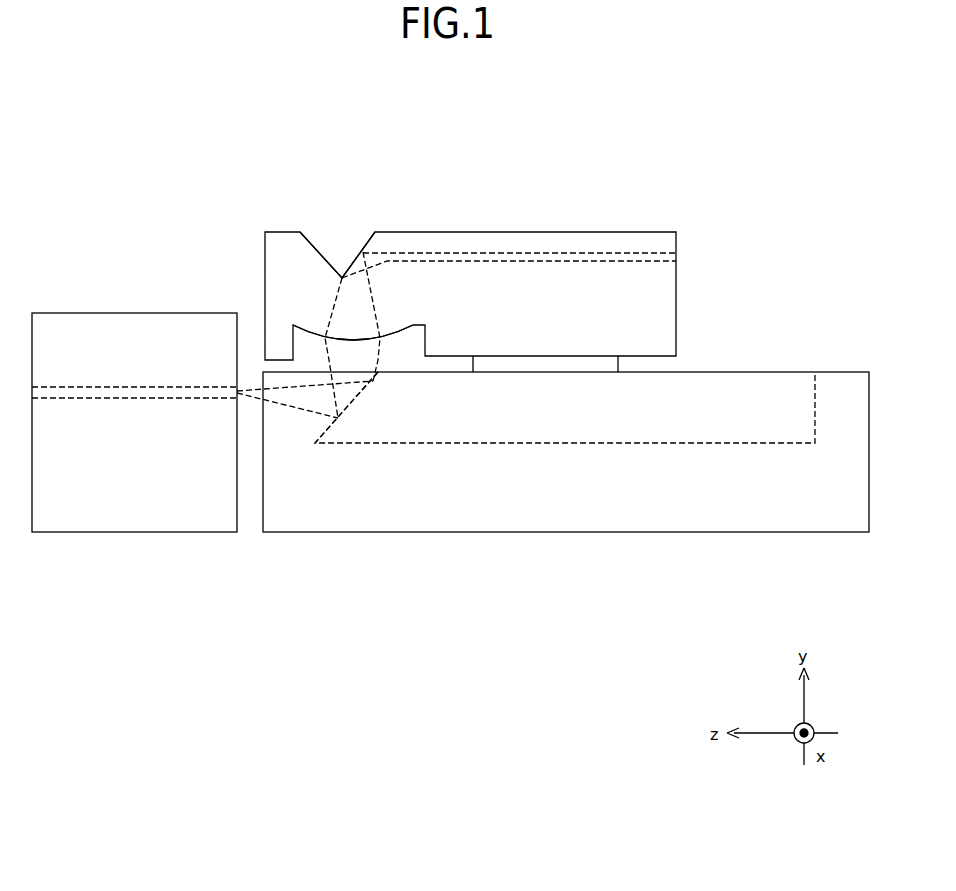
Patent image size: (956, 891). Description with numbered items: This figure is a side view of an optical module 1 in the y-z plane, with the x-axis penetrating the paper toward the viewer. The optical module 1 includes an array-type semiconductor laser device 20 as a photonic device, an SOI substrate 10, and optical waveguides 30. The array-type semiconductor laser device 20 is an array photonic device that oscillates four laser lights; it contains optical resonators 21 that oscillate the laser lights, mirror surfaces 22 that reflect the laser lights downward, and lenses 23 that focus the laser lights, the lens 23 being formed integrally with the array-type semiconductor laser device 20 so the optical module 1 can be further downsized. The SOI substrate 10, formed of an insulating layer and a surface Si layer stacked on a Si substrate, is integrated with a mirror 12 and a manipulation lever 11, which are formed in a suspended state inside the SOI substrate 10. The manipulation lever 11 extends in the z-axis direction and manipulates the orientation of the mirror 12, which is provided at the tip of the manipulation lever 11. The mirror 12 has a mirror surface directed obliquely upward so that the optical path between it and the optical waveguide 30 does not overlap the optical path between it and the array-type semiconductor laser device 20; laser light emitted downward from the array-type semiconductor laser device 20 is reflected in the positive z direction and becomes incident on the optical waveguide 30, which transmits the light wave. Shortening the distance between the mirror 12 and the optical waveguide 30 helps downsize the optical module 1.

The optical module 1 is at (695, 165).
The SOI substrate 10 is at (837, 385).
The manipulation lever 11 is at (470, 444).
The mirror 12 is at (365, 397).
The array-type semiconductor laser device 20 is at (610, 232).
The optical resonators 21 is at (678, 258).
The mirror surfaces 22 is at (353, 265).
The lenses 23 is at (310, 328).
The optical waveguides 30 is at (132, 387).